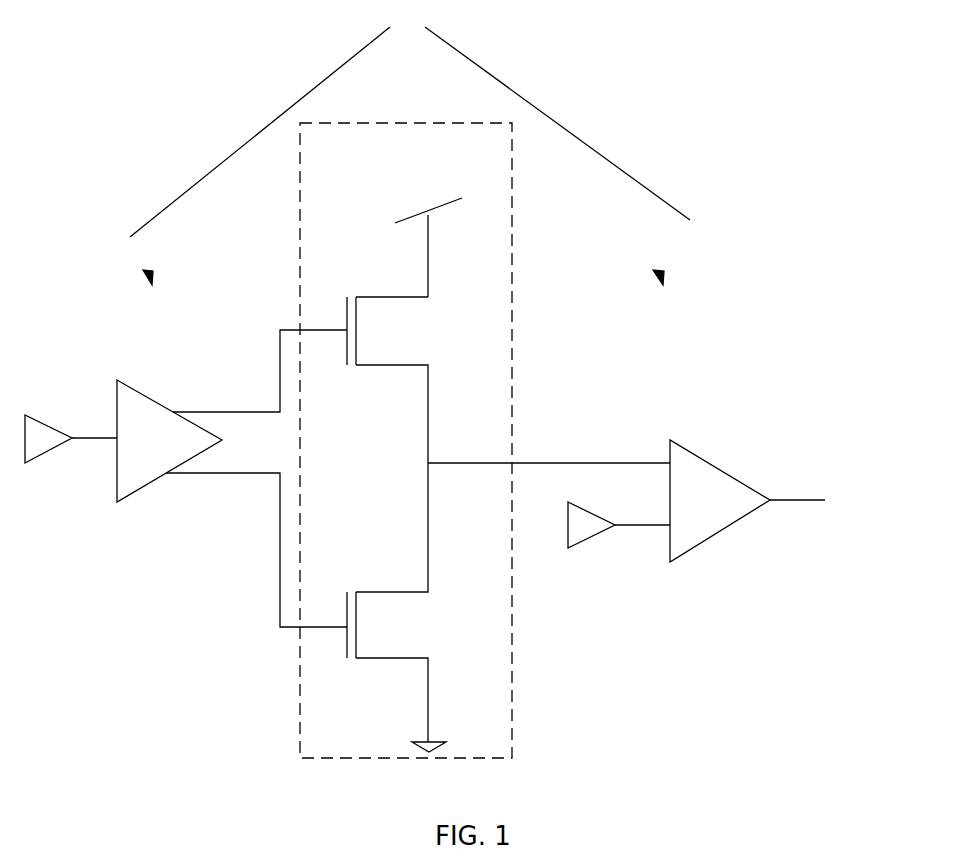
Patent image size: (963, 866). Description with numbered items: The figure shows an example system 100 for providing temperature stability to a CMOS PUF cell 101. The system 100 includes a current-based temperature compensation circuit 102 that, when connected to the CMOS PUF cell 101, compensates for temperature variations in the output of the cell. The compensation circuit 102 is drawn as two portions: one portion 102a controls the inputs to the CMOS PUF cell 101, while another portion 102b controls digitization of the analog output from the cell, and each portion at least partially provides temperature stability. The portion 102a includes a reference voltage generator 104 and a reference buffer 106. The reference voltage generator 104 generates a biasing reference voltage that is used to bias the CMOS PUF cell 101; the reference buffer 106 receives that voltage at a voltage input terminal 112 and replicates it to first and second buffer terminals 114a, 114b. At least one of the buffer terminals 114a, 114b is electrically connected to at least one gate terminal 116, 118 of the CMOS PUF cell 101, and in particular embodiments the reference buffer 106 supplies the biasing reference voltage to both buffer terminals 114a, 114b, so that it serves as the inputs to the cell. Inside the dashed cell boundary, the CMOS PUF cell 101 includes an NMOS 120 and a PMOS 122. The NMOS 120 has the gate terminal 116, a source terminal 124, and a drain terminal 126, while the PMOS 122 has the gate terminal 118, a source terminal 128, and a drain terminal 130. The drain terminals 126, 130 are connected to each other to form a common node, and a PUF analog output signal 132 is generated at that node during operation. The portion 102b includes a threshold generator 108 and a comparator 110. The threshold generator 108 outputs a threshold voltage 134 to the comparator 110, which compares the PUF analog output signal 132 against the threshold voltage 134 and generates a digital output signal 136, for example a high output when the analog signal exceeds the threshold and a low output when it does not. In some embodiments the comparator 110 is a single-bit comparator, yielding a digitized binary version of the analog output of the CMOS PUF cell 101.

The system 100 is at (84, 39).
The CMOS PUF cell 101 is at (407, 123).
The current-based temperature compensation circuit 102 is at (410, 122).
The portion of the compensation circuit 102a is at (149, 276).
The portion of the compensation circuit 102b is at (659, 276).
The reference voltage generator 104 is at (25, 463).
The reference buffer 106 is at (141, 392).
The threshold generator 108 is at (580, 548).
The comparator 110 is at (713, 457).
The voltage input terminal 112 is at (96, 441).
The first buffer terminal 114a is at (244, 474).
The second buffer terminal 114b is at (238, 411).
The gate terminal 116 is at (315, 629).
The gate terminal 118 is at (316, 333).
The NMOS 120 is at (384, 591).
The PMOS 122 is at (408, 296).
The source terminal 124 is at (430, 668).
The drain terminal 126 is at (430, 574).
The source terminal 128 is at (430, 269).
The drain terminal 130 is at (430, 372).
The PUF analog output signal 132 is at (636, 462).
The threshold voltage 134 is at (656, 524).
The digital output signal 136 is at (822, 502).